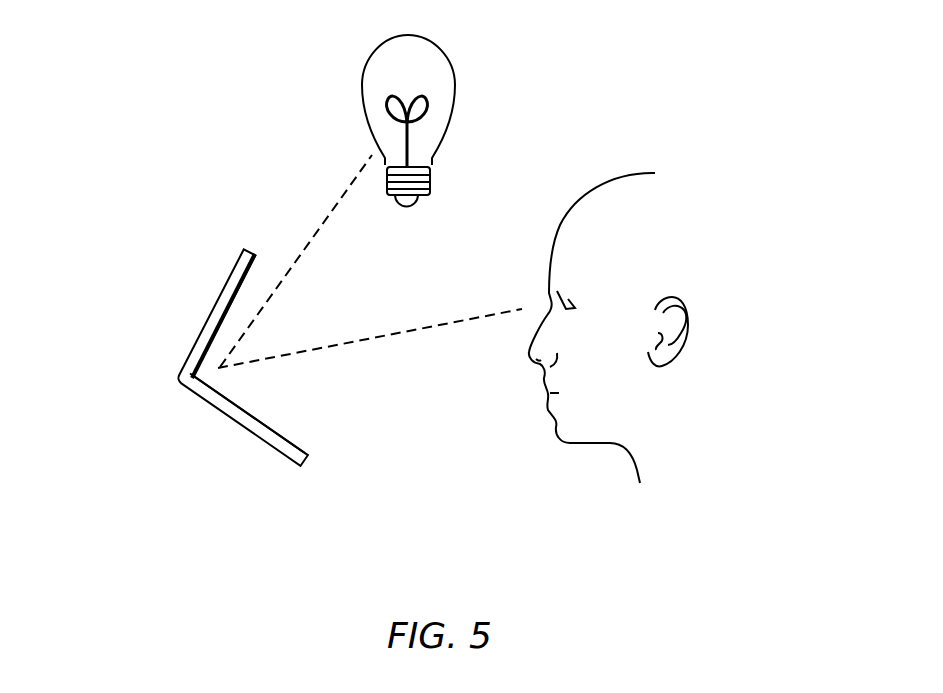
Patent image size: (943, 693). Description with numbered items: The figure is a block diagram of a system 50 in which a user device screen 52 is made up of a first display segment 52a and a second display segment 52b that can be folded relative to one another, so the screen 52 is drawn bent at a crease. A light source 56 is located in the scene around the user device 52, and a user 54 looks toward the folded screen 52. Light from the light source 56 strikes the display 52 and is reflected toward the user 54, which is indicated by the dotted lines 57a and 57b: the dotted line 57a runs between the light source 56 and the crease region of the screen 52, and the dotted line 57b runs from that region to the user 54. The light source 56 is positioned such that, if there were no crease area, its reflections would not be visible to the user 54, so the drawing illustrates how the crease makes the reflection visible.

The system 50 is at (744, 519).
The user device screen 52 is at (181, 380).
The first display segment 52a is at (250, 430).
The second display segment 52b is at (213, 315).
The user 54 is at (593, 195).
The light source 56 is at (457, 75).
The dotted line 57a is at (332, 212).
The dotted line 57b is at (372, 342).